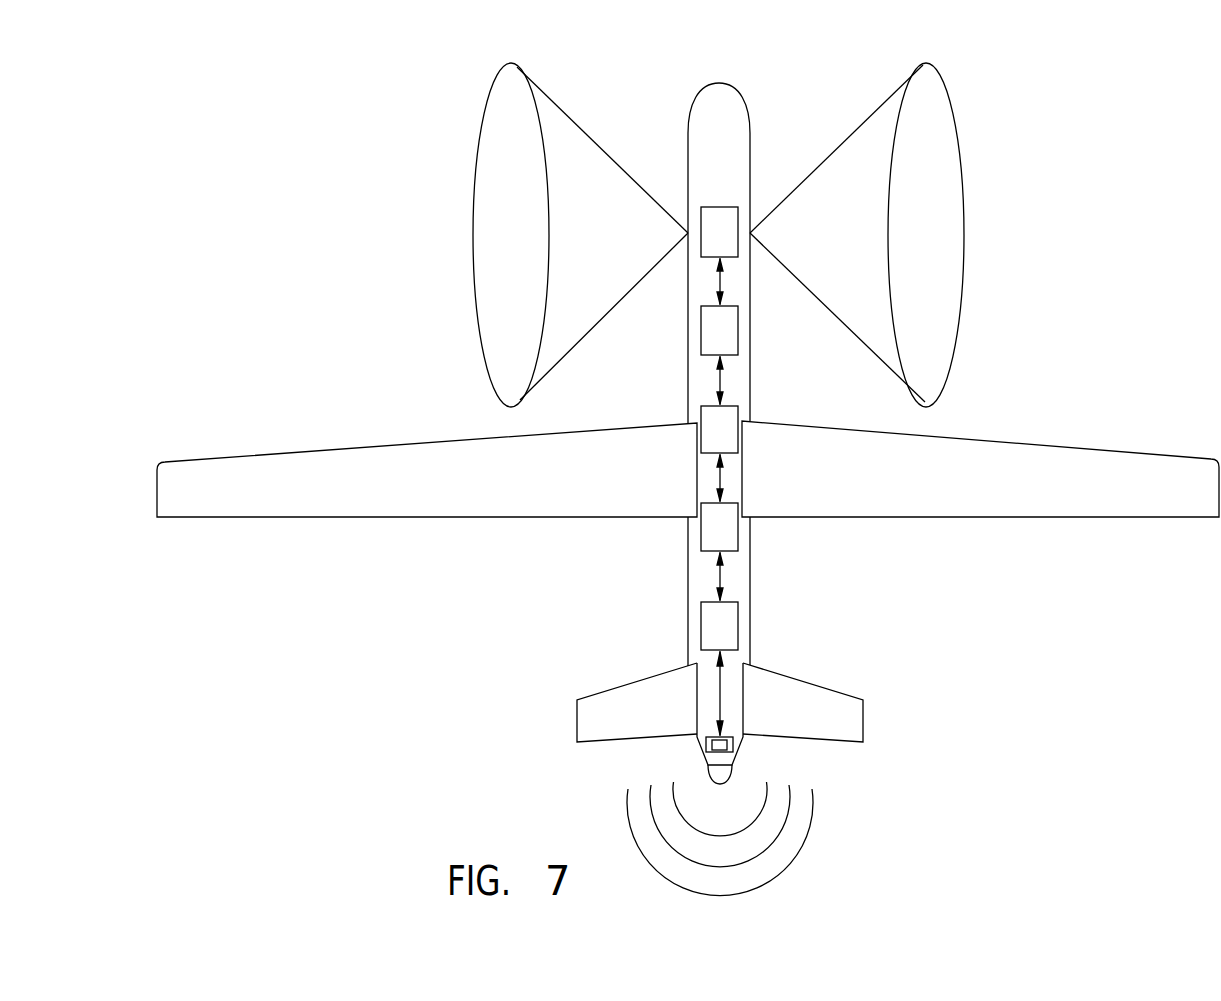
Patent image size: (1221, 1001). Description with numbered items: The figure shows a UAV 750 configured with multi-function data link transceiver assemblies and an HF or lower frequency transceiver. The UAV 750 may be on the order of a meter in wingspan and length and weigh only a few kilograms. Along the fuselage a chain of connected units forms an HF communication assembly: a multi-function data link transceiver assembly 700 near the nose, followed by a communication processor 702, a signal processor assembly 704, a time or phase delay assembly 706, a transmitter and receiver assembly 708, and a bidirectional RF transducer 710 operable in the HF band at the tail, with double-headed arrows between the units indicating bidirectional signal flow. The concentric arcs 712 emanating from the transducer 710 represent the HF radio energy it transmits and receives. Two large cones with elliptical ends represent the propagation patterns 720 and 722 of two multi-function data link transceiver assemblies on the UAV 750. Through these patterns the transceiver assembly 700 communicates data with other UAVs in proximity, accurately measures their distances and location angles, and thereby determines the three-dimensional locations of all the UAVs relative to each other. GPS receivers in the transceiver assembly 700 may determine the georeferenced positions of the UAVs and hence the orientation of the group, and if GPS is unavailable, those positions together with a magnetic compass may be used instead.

The multi-function data link transceiver assembly 700 is at (740, 257).
The communication processor 702 is at (700, 323).
The signal processor assembly 704 is at (700, 413).
The time or phase delay assembly 706 is at (701, 533).
The transmitter and receiver assembly 708 is at (703, 628).
The bidirectional RF transducer 710 is at (705, 745).
The radio signal 712 is at (773, 853).
The propagation pattern 720 is at (577, 122).
The propagation pattern 722 is at (828, 155).
The UAV 750 is at (723, 93).